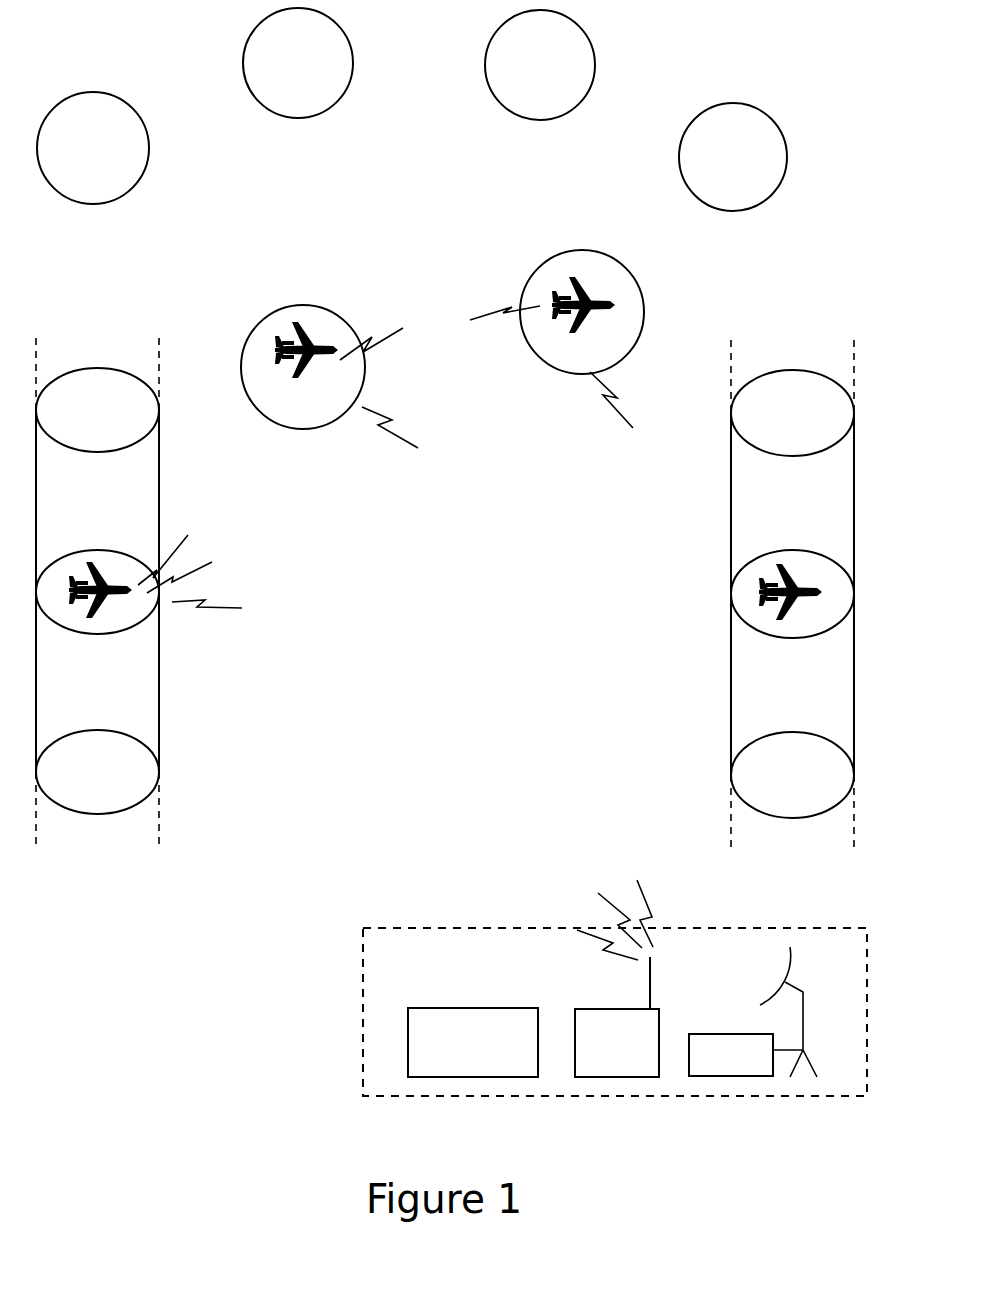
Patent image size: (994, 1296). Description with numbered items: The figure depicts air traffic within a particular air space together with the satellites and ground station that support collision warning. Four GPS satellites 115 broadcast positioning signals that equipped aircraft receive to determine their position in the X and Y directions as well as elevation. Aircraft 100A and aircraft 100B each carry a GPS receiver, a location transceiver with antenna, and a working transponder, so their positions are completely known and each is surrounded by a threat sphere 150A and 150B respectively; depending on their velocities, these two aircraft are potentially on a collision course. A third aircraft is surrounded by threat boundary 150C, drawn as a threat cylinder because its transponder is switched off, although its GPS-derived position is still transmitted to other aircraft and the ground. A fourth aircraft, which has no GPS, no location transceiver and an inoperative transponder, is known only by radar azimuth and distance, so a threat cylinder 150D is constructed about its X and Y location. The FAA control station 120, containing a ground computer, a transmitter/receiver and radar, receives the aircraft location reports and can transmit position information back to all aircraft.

The GPS satellites 115 is at (361, 53).
The threat boundary 150A is at (577, 248).
The threat boundary 150B is at (325, 305).
The threat boundary 150C is at (168, 717).
The threat cylinder 150D is at (721, 680).
The aircraft 100A is at (551, 314).
The aircraft 100B is at (320, 360).
The FAA control station 120 is at (492, 925).